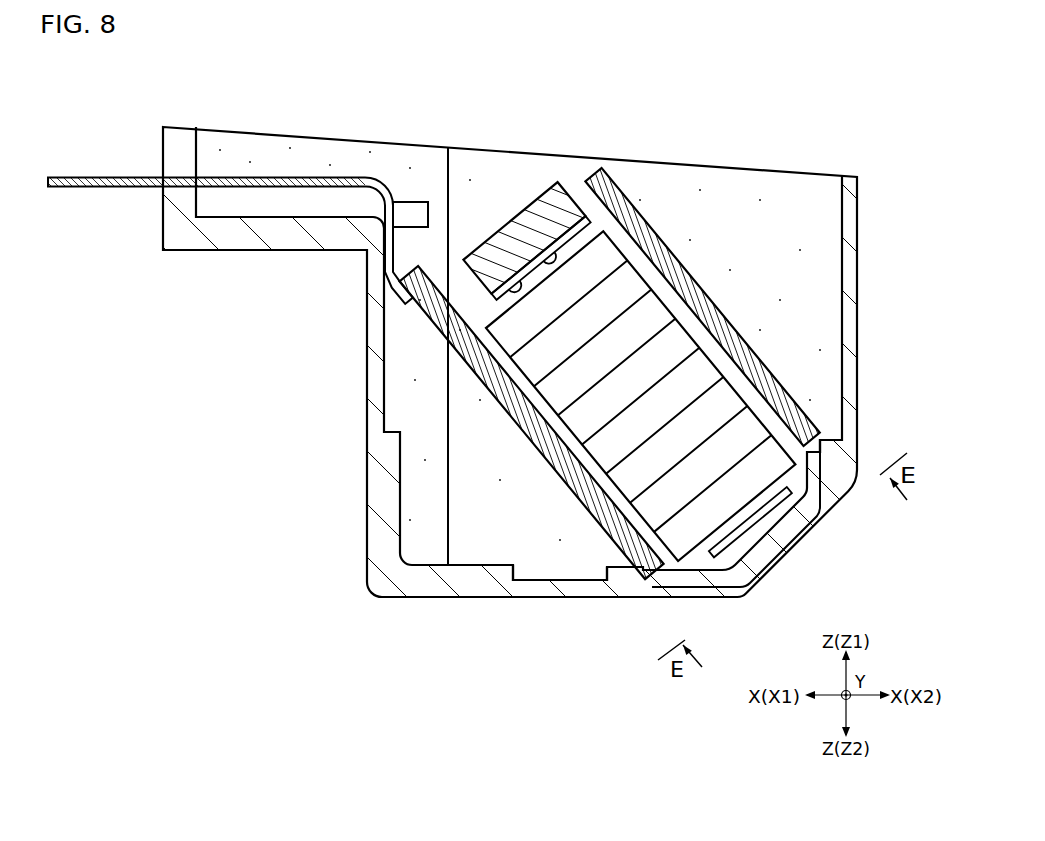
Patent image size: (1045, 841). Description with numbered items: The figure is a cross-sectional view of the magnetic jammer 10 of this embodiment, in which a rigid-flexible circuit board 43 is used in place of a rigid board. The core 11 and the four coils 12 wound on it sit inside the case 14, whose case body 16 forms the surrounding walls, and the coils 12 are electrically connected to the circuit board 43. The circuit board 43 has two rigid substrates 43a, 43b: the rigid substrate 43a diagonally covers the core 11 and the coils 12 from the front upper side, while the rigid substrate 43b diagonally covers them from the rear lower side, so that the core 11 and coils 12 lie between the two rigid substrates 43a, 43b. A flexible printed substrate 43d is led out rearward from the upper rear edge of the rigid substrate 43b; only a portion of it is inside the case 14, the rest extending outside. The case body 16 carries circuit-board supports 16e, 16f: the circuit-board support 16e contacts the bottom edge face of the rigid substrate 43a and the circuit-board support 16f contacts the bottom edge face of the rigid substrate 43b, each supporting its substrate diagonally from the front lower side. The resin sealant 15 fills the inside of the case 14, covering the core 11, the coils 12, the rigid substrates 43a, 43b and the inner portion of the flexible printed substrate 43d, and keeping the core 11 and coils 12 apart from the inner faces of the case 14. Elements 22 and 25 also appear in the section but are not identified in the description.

The magnetic jammer 10 is at (845, 106).
The core 11 is at (535, 188).
The coils 12 is at (827, 500).
The case 14 is at (858, 228).
The resin sealant 15 is at (738, 178).
The case body 16 is at (858, 228).
The circuit-board support 16e is at (812, 438).
The circuit-board support 16f is at (645, 568).
The circuit board 22 is at (745, 535).
The bearing plate 25 is at (535, 188).
The circuit board 43 is at (680, 260).
The rigid substrate 43a is at (680, 260).
The rigid substrate 43b is at (520, 416).
The flexible printed substrate 43d is at (272, 177).